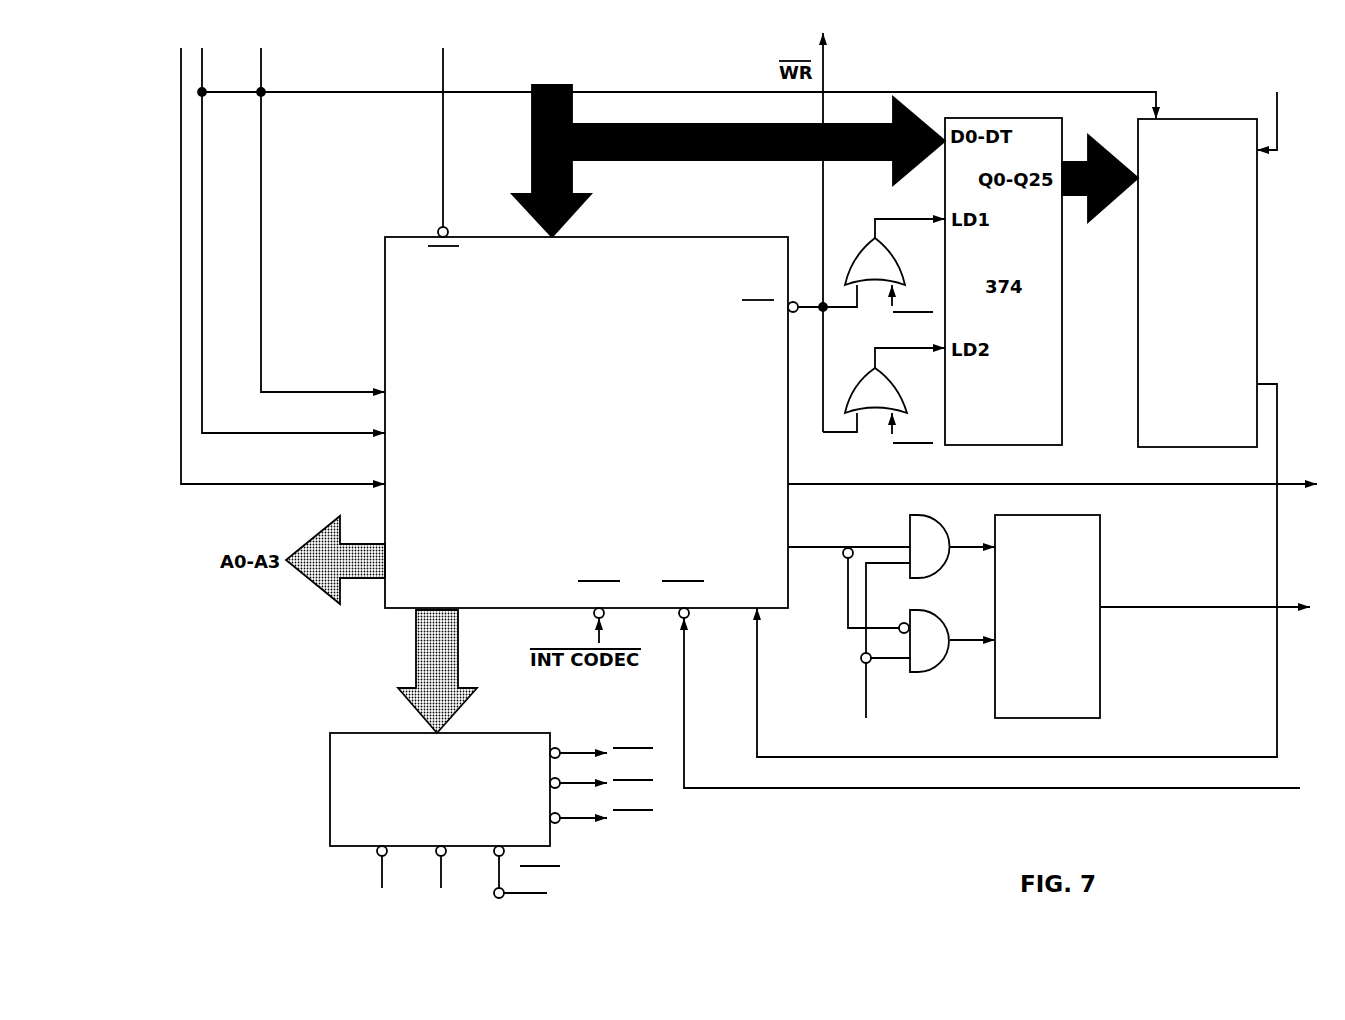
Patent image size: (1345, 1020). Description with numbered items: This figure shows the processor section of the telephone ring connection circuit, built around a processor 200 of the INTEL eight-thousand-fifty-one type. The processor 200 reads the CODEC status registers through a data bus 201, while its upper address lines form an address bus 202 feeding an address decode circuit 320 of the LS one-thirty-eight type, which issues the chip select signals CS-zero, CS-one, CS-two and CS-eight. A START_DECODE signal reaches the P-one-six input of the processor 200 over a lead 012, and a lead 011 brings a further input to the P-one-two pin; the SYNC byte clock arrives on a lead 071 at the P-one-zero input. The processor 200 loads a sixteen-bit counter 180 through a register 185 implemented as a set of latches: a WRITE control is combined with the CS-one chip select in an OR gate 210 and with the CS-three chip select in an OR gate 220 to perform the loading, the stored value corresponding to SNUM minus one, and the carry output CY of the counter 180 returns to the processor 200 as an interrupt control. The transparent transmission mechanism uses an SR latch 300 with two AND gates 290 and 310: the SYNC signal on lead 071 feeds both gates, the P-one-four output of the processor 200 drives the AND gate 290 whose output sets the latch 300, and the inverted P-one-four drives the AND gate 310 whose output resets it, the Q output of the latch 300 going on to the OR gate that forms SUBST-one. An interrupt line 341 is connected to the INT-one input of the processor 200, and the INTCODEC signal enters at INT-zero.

The processor 200 is at (789, 601).
The data bus 201 is at (532, 116).
The address bus 202 is at (403, 697).
The register (set of latches) 185 is at (1062, 132).
The 16-bit counter 180 is at (1207, 263).
The OR gate 210 is at (893, 262).
The OR gate 220 is at (895, 395).
The input line P1-2 011 is at (181, 440).
The lead 012 is at (203, 390).
The lead 071 is at (261, 95).
The AND gate 290 is at (947, 531).
The AND gate 310 is at (940, 613).
The SR latch 300 is at (1102, 547).
The address decode circuit 320 is at (550, 733).
The INT1 line 341 is at (1205, 788).